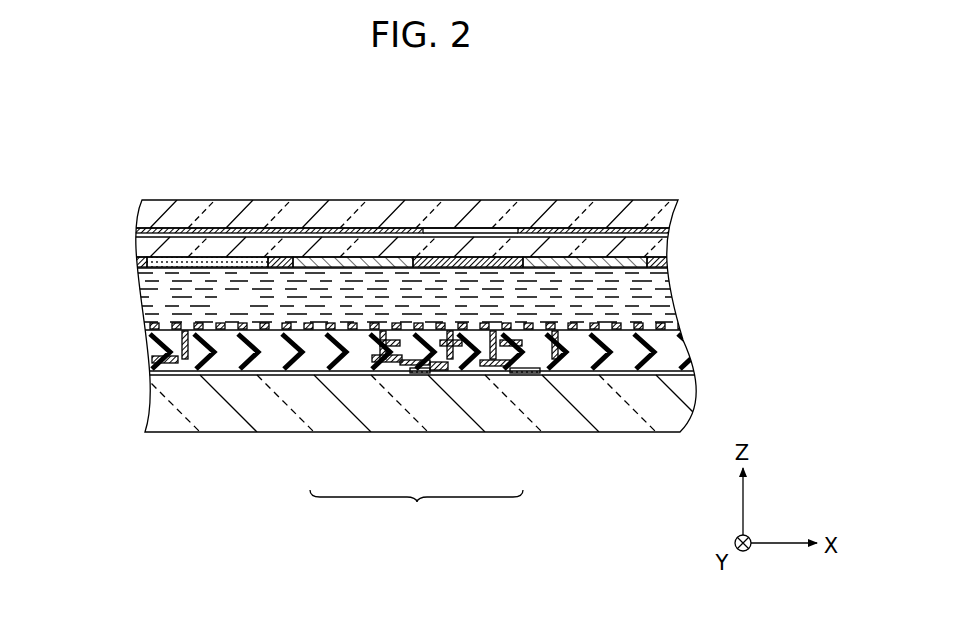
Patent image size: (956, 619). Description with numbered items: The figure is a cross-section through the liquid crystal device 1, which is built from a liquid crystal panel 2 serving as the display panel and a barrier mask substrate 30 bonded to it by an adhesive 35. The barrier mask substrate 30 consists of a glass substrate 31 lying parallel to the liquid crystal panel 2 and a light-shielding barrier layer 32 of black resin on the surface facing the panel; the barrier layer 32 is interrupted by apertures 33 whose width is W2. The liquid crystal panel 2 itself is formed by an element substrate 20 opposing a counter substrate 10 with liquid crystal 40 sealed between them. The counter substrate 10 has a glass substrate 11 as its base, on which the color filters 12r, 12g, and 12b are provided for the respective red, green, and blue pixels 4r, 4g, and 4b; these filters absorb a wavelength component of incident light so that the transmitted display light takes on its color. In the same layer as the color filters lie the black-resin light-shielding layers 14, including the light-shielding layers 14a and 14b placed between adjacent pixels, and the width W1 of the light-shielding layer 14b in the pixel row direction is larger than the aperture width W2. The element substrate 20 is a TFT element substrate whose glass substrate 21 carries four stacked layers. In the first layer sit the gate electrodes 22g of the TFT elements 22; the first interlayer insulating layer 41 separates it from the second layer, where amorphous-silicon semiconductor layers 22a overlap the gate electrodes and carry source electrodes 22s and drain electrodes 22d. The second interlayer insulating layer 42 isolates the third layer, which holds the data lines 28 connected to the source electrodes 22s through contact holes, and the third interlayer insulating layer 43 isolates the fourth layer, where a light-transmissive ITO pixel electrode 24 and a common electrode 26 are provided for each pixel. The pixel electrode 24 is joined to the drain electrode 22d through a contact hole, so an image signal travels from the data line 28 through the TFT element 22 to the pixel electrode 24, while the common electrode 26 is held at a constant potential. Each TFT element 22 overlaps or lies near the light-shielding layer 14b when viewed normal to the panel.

The liquid crystal device 1 is at (680, 135).
The liquid crystal panel 2 is at (740, 432).
The counter substrate 10 is at (670, 238).
The glass substrate 11 is at (135, 247).
The color filter 12g is at (200, 257).
The color filter 12b is at (300, 260).
The color filter 12r is at (607, 262).
The light-shielding layer 14 is at (318, 295).
The light-shielding layer 14a is at (287, 265).
The light-shielding layer 14b is at (440, 263).
The element substrate 20 is at (684, 328).
The glass substrate 21 is at (152, 402).
The TFT element 22 is at (528, 384).
The semiconductor layer 22a is at (400, 373).
The drain electrode 22d is at (372, 373).
The gate electrode 22g is at (432, 373).
The source electrode 22s is at (478, 373).
The pixel electrode 24 is at (270, 323).
The common electrode 26 is at (152, 330).
The data line 28 is at (457, 333).
The barrier mask substrate 30 is at (683, 200).
The glass substrate 31 is at (140, 209).
The barrier layer 32 is at (403, 230).
The aperture 33 is at (508, 232).
The adhesive 35 is at (135, 232).
The liquid crystal 40 is at (145, 299).
The first interlayer insulating layer 41 is at (578, 373).
The second interlayer insulating layer 42 is at (620, 373).
The third interlayer insulating layer 43 is at (655, 345).
The pixel 4g is at (272, 196).
The pixel 4b is at (293, 196).
The pixel 4r is at (647, 196).
The width of the light-shielding layer W1 is at (415, 196).
The width of the aperture W2 is at (517, 196).